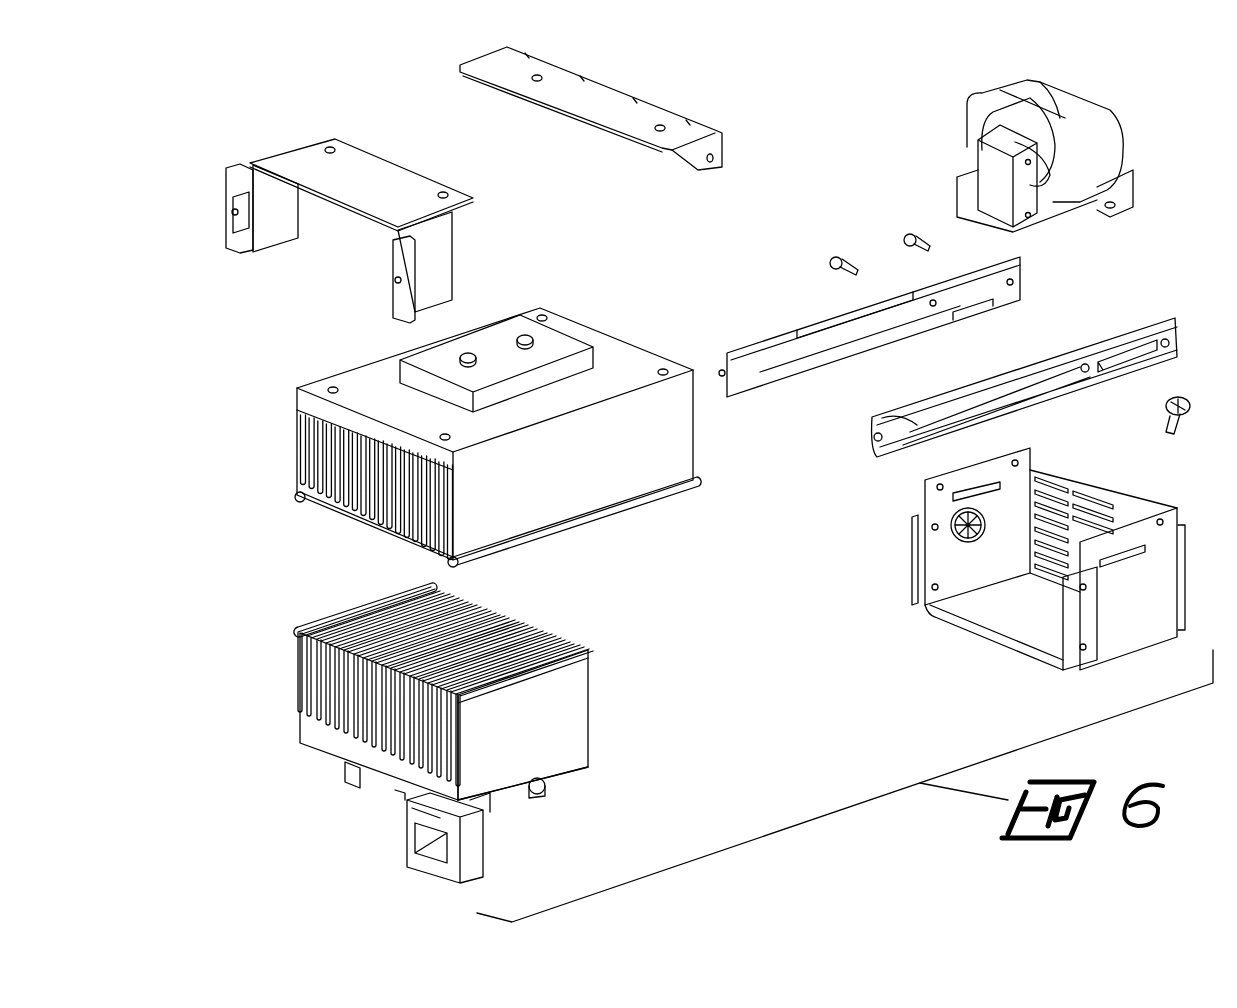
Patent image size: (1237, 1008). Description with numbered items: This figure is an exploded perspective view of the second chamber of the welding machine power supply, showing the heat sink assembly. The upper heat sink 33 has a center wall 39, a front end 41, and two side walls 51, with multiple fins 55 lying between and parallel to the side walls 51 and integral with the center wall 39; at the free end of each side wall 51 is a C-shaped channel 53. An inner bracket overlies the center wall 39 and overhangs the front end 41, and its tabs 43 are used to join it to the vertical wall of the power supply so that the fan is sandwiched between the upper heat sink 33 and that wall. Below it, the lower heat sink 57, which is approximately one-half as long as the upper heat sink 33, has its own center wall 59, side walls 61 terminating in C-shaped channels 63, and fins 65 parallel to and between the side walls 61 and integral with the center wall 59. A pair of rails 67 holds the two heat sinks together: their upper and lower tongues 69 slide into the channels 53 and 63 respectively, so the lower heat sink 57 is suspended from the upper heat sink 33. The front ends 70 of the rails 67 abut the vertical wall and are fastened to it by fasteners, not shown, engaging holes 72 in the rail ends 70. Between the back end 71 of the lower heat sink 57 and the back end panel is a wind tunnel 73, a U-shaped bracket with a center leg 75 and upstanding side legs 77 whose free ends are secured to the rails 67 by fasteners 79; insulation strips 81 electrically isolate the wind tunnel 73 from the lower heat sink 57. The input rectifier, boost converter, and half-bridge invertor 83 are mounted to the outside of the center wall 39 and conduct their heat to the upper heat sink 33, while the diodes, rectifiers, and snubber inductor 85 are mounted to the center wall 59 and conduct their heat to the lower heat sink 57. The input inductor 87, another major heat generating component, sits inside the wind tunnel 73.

The upper heat sink 33 is at (476, 427).
The center wall 39 is at (317, 400).
The front end 41 is at (297, 410).
The tabs 43 is at (240, 240).
The side walls 51 is at (660, 467).
The C-shaped channel 53 is at (295, 498).
The fins 55 is at (390, 537).
The lower heat sink 57 is at (454, 733).
The center wall 59 is at (318, 740).
The side walls 61 is at (300, 675).
The C-shaped channels 63 is at (302, 636).
The fins 65 is at (545, 630).
The rails 67 is at (988, 407).
The tongues 69 is at (940, 425).
The front ends 70 is at (715, 362).
The back end 71 is at (590, 757).
The holes 72 is at (870, 438).
The wind tunnel 73 is at (1037, 566).
The center leg 75 is at (960, 620).
The side legs 77 is at (930, 505).
The fasteners 79 is at (1170, 418).
The insulation strips 81 is at (1070, 645).
The input rectifier, boost converter, and half-bridge invertor 83 is at (487, 340).
The diodes, rectifiers, and snubber inductor 85 is at (395, 788).
The input inductor 87 is at (1110, 147).